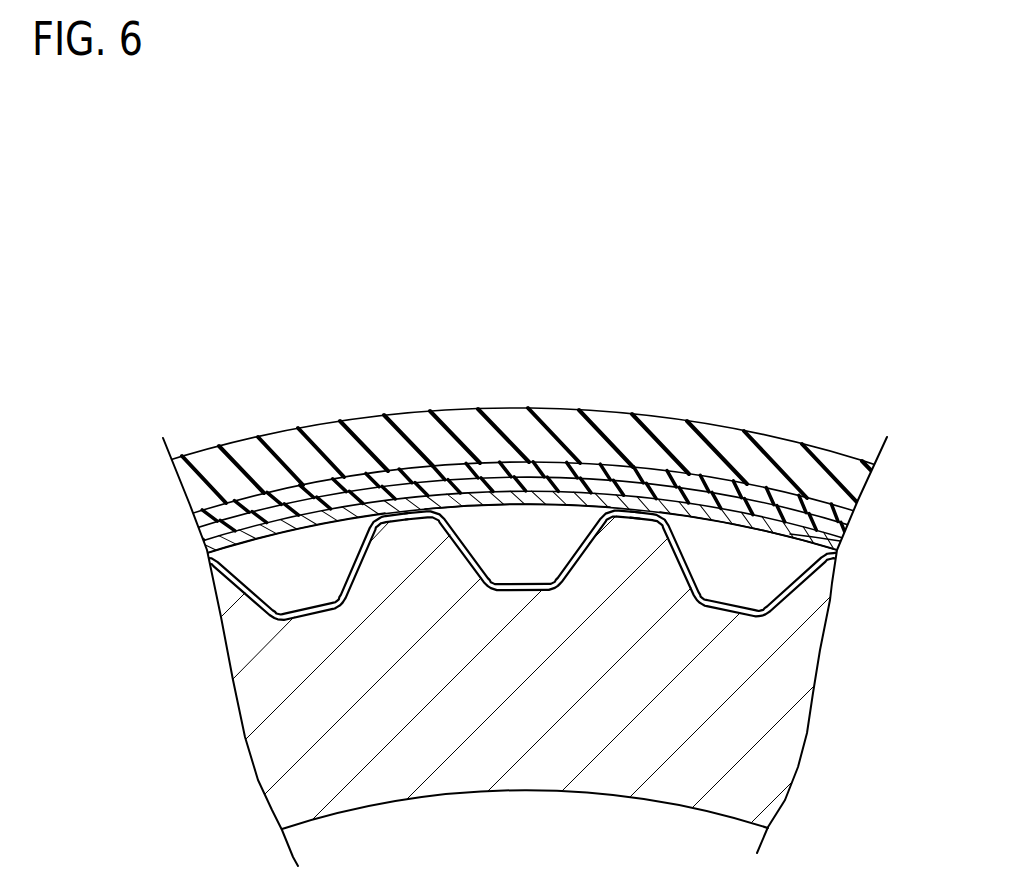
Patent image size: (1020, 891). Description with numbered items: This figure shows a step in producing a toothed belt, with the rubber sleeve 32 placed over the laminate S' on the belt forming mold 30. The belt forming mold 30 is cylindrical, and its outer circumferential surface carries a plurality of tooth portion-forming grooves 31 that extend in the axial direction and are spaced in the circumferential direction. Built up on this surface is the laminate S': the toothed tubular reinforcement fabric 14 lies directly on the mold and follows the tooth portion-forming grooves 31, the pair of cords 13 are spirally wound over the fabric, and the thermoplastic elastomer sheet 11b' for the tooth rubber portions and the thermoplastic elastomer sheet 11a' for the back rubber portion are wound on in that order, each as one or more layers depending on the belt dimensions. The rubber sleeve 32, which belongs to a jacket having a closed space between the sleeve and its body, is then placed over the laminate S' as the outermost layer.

The belt forming mold 30 is at (783, 735).
The toothed tubular reinforcement fabric 14 is at (302, 616).
The rubber sleeve 32 is at (497, 408).
The thermoplastic elastomer sheet for a back rubber portion 11a' is at (530, 465).
The thermoplastic elastomer sheet for tooth rubber portions 11b' is at (530, 453).
The cords 13 is at (400, 505).
The tooth portion-forming grooves 31 is at (362, 557).
The laminate S' is at (826, 464).